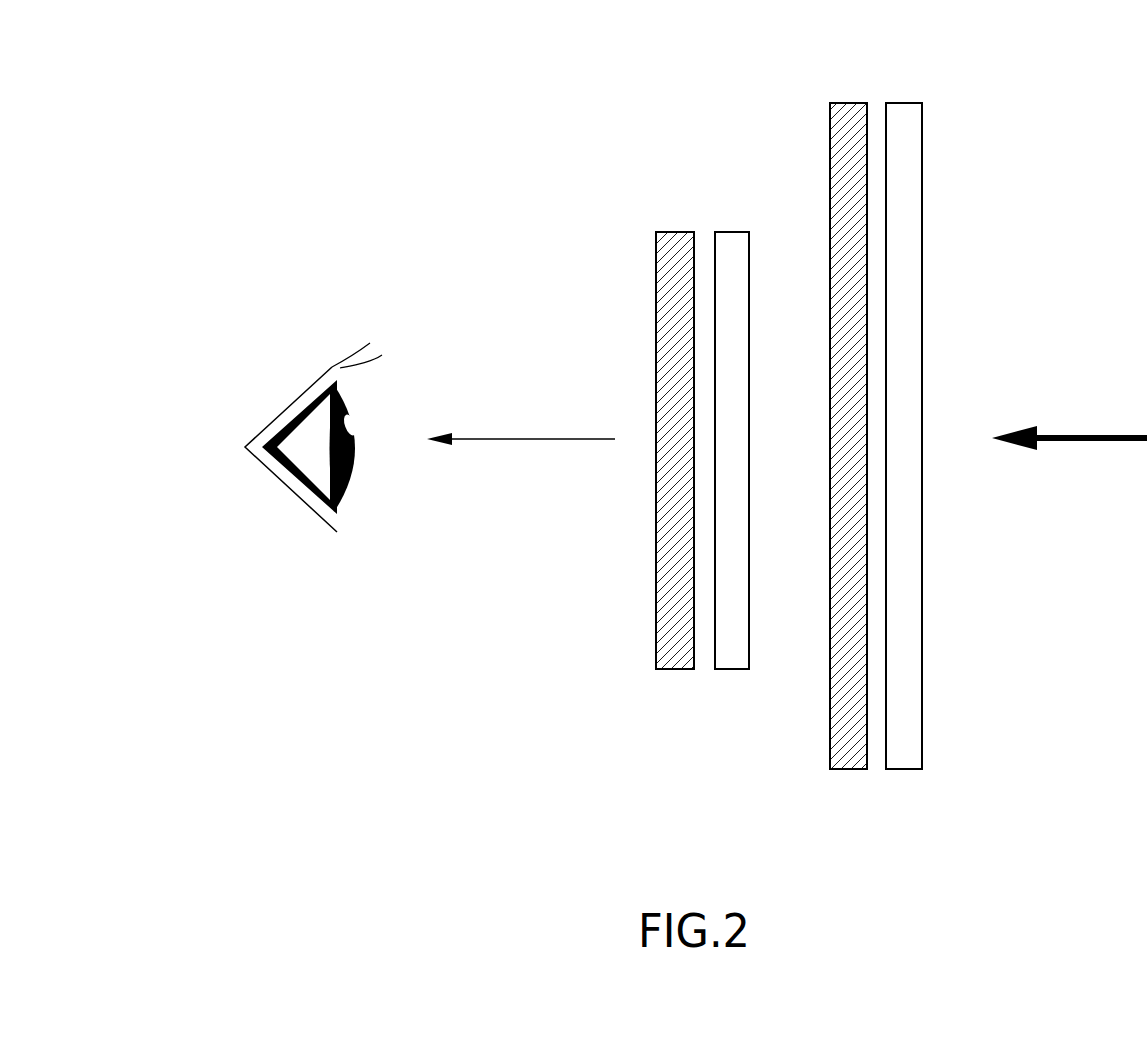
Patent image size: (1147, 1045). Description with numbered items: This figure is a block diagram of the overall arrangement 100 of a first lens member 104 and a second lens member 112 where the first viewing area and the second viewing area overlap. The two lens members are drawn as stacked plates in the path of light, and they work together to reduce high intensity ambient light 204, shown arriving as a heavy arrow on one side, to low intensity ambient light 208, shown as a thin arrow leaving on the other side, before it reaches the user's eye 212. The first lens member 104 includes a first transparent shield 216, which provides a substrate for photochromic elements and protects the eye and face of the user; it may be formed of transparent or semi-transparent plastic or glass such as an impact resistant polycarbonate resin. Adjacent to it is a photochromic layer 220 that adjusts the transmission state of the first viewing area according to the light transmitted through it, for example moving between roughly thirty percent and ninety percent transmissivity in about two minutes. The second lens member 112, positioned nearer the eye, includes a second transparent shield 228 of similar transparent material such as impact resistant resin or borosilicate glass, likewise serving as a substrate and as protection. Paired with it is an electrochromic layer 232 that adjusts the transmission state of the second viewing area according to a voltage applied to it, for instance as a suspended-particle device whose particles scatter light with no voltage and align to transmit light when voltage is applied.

The optical system 100 is at (222, 132).
The first lens member 104 is at (830, 97).
The second lens member 112 is at (656, 222).
The high intensity ambient light 204 is at (1069, 429).
The low intensity ambient light 208 is at (521, 428).
The user's eye 212 is at (297, 404).
The first transparent shield 216 is at (904, 769).
The photochromic layer 220 is at (848, 769).
The second transparent shield 228 is at (727, 669).
The electrochromic layer 232 is at (676, 669).